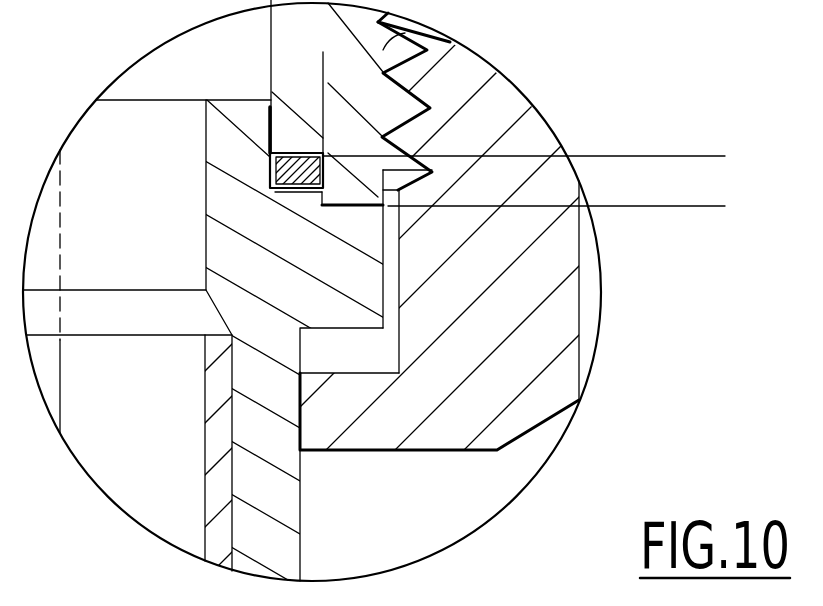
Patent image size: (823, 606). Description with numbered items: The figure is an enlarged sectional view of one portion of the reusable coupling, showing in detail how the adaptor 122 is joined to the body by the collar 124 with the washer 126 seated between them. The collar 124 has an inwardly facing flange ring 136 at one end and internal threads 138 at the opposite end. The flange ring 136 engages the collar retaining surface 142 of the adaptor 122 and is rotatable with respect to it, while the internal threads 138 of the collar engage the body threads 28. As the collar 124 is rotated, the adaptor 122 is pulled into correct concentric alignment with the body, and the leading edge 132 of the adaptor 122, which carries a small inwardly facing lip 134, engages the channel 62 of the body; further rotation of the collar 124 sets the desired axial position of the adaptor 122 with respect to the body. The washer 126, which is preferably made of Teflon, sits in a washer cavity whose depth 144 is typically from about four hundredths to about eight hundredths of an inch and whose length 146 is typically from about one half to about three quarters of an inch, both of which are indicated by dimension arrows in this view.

The body threads 28 is at (452, 41).
The channel 62 is at (250, 37).
The adaptor 122 is at (300, 403).
The collar 124 is at (579, 320).
The washer 126 is at (292, 190).
The leading edge 132 is at (183, 93).
The inwardly facing lip 134 is at (265, 143).
The flange ring 136 is at (365, 374).
The internal threads 138 is at (422, 97).
The collar retaining surface 142 is at (360, 336).
The depth 144 is at (703, 128).
The length 146 is at (323, 68).